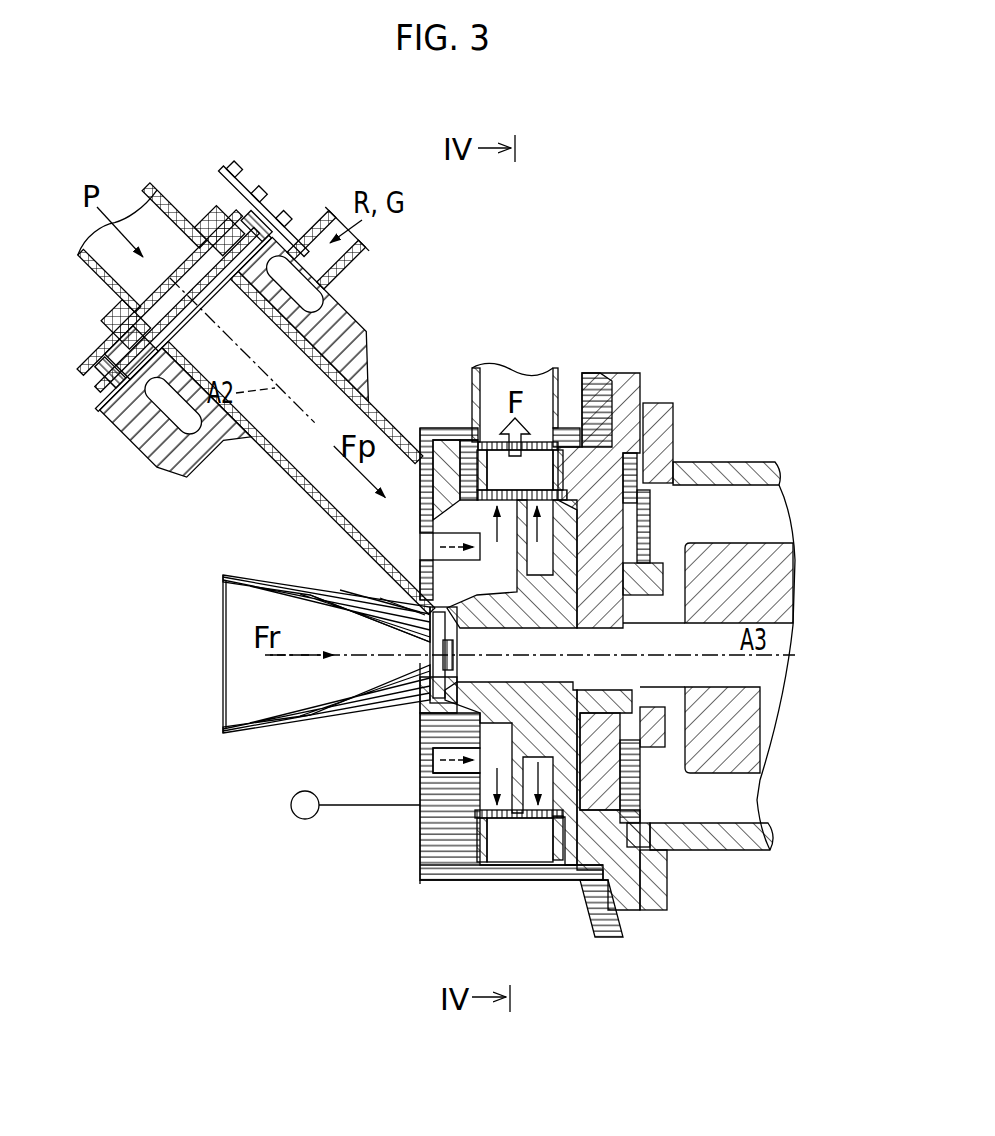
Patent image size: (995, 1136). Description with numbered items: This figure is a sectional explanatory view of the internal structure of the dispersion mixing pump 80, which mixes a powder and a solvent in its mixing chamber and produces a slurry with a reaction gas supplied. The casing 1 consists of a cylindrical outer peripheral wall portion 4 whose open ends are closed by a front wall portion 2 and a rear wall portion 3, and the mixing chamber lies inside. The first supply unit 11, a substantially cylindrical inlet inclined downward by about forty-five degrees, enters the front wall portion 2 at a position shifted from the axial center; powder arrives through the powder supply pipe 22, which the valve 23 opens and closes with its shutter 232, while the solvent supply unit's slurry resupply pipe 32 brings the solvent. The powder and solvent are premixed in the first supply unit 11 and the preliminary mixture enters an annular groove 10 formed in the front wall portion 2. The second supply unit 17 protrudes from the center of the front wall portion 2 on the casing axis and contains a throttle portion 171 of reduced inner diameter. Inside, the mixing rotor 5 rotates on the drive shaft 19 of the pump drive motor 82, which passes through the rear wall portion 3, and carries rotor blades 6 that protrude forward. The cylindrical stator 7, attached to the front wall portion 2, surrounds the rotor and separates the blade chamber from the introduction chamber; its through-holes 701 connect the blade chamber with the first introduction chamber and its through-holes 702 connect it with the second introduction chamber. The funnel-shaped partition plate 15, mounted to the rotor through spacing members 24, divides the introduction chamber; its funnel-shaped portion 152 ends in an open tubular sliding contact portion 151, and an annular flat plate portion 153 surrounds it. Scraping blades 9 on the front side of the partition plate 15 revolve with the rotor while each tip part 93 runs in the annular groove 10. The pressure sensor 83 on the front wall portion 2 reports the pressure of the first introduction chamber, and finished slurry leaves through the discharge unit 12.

The casing 1 is at (418, 868).
The front wall portion 2 is at (418, 822).
The rear wall portion 3 is at (652, 800).
The outer peripheral wall portion 4 is at (437, 867).
The mixing rotor 5 is at (652, 532).
The rotor blades 6 is at (522, 378).
The stator 7 is at (512, 858).
The scraping blades 9 is at (420, 757).
The annular groove 10 is at (432, 547).
The first supply unit 11 is at (322, 463).
The discharge unit 12 is at (512, 373).
The partition plate 15 is at (420, 565).
The second supply unit 17 is at (265, 722).
The drive shaft 19 is at (750, 670).
The powder supply pipe 22 is at (158, 190).
The valve 23 is at (88, 405).
The spacing members 24 is at (652, 495).
The slurry resupply pipe 32 is at (317, 237).
The dispersion mixing pump 80 is at (330, 968).
The pump drive motor 82 is at (737, 460).
The pressure sensor 83 is at (294, 814).
The tip part 93 is at (420, 768).
The tubular sliding contact portion 151 is at (413, 617).
The funnel-shaped portion 152 is at (352, 614).
The annular flat plate portion 153 is at (480, 533).
The throttle portion 171 is at (375, 630).
The shutter 232 is at (140, 388).
The through-holes 701 is at (508, 478).
The through-holes 702 is at (545, 418).